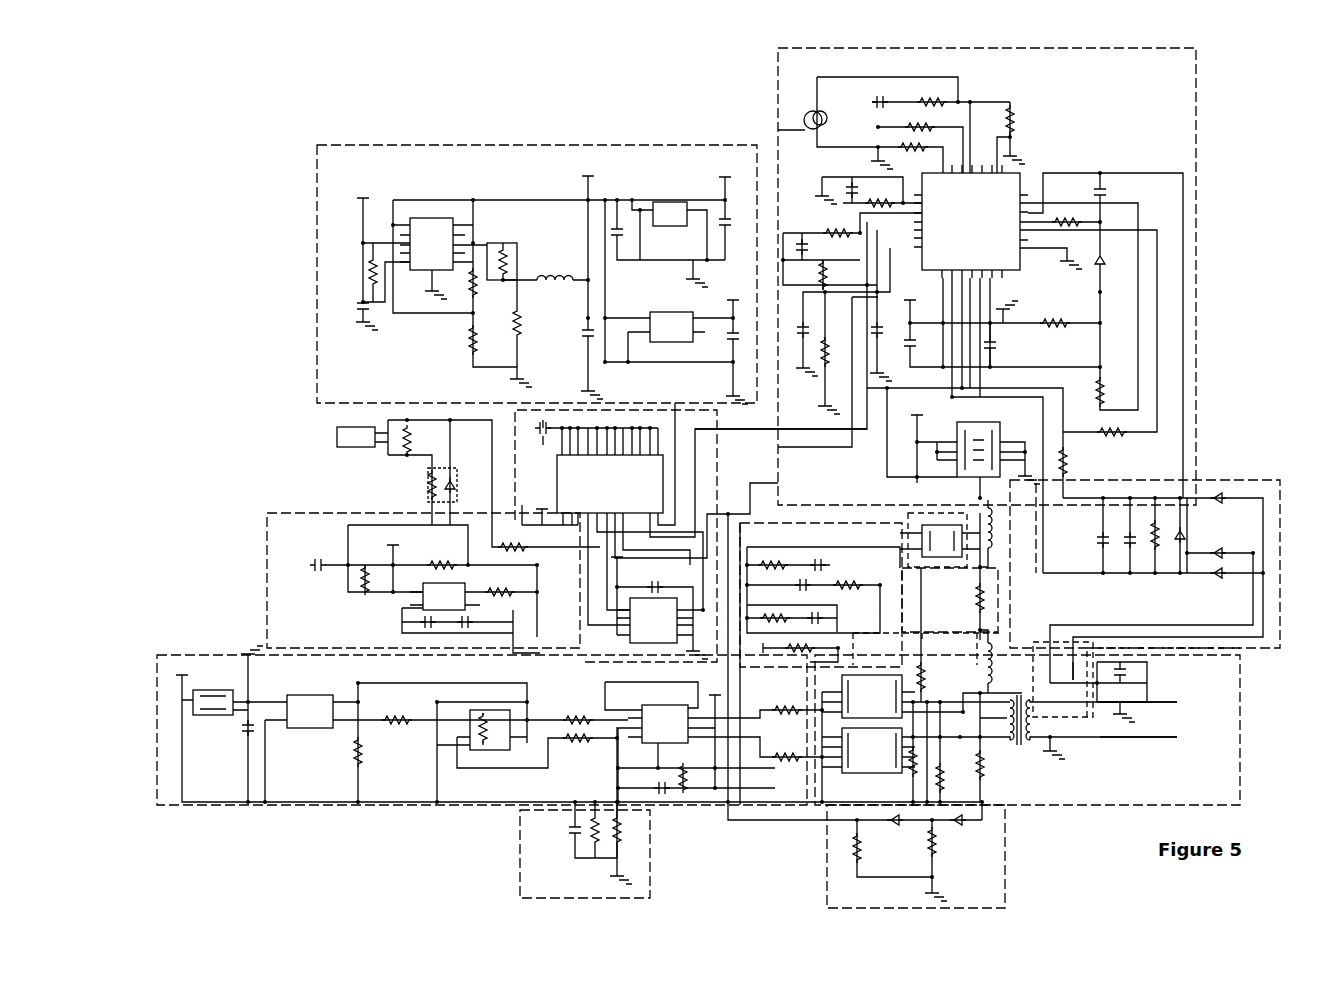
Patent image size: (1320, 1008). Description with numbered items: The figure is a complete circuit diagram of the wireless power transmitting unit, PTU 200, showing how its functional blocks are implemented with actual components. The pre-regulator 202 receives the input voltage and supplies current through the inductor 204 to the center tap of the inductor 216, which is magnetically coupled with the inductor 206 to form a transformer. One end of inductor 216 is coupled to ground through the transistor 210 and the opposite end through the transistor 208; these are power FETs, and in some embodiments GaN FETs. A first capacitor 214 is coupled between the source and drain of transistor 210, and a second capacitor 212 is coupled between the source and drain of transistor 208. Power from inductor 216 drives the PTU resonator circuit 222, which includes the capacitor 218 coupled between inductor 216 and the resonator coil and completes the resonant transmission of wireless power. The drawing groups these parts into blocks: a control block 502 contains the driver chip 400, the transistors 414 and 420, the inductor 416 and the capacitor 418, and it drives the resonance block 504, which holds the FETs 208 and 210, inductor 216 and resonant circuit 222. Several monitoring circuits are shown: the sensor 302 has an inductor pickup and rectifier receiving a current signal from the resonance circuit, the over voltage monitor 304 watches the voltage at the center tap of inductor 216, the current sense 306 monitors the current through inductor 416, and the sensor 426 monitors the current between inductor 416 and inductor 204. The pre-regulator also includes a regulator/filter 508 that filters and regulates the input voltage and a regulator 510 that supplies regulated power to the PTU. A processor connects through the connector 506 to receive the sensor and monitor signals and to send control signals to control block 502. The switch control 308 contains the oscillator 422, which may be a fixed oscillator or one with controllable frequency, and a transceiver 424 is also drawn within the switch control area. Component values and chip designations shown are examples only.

The PTU 200 is at (200, 83).
The pre-regulator 202 is at (700, 120).
The inductor 204 is at (979, 666).
The inductor 206 is at (1040, 728).
The transistor 208 is at (876, 764).
The transistor 210 is at (876, 707).
The second capacitor 212 is at (940, 774).
The first capacitor 214 is at (912, 672).
The inductor 216 is at (1009, 738).
The capacitor 218 is at (1140, 682).
The PTU resonator circuit 222 is at (1103, 730).
The sensor 302 is at (1151, 607).
The over voltage monitor 304 is at (906, 864).
The current sense 306 is at (564, 887).
The switch control 308 is at (414, 759).
The driver chip 400 is at (981, 229).
The transistor 414 is at (975, 470).
The inductor 416 is at (993, 537).
The capacitor 418 is at (950, 607).
The transistor 420 is at (972, 513).
The oscillator 422 is at (217, 716).
The RS-232 transceiver 424 is at (700, 744).
The sensor 426 is at (834, 544).
The control block 502 is at (1148, 476).
The resonance block 504 is at (1218, 791).
The connector 506 is at (548, 479).
The regulator/filter 508 is at (322, 619).
The regulator 510 is at (406, 374).